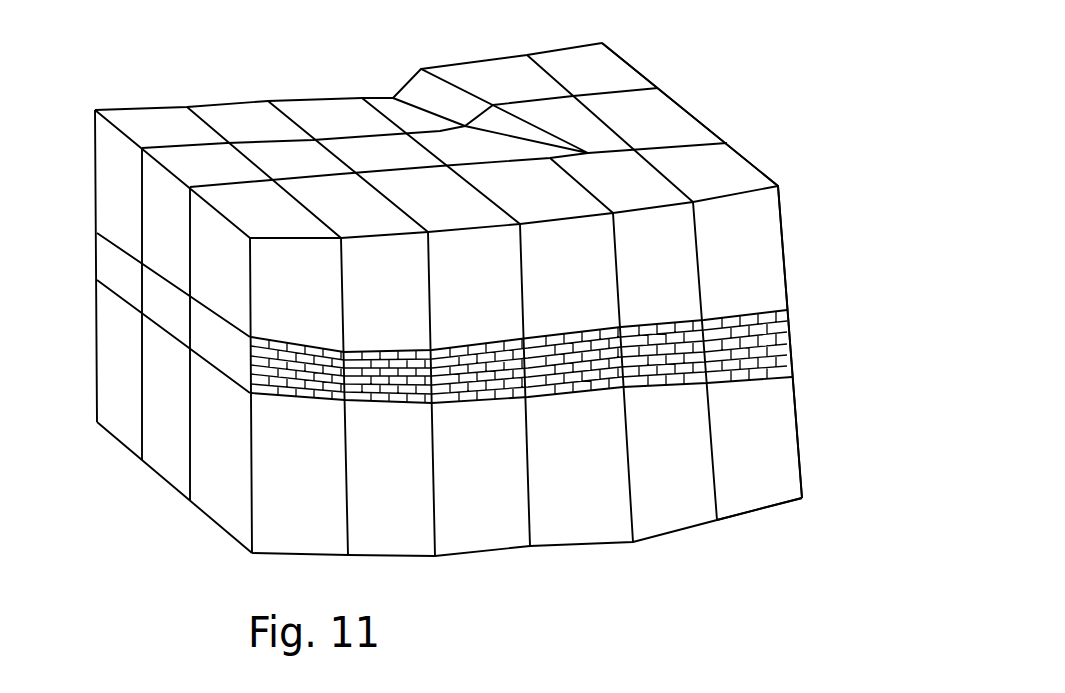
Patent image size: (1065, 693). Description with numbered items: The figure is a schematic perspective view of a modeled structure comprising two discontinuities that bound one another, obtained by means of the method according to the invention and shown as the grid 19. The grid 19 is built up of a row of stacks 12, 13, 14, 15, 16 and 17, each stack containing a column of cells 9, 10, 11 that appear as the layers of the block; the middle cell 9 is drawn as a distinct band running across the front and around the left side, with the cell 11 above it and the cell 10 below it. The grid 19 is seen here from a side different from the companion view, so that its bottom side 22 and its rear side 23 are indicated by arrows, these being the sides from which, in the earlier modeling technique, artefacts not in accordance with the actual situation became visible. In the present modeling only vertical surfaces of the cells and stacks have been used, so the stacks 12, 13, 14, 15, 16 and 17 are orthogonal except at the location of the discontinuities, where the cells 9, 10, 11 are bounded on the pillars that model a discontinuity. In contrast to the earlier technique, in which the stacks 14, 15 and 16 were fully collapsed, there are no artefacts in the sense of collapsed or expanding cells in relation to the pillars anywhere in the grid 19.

The cell 9 is at (175, 298).
The cell 10 is at (165, 397).
The cell 11 is at (183, 197).
The stack 12 is at (142, 136).
The stack 13 is at (232, 134).
The stack 14 is at (319, 132).
The stack 15 is at (468, 88).
The stack 16 is at (495, 94).
The stack 17 is at (574, 84).
The grid 19 is at (810, 186).
The bottom side 22 is at (728, 62).
The rear side 23 is at (602, 583).